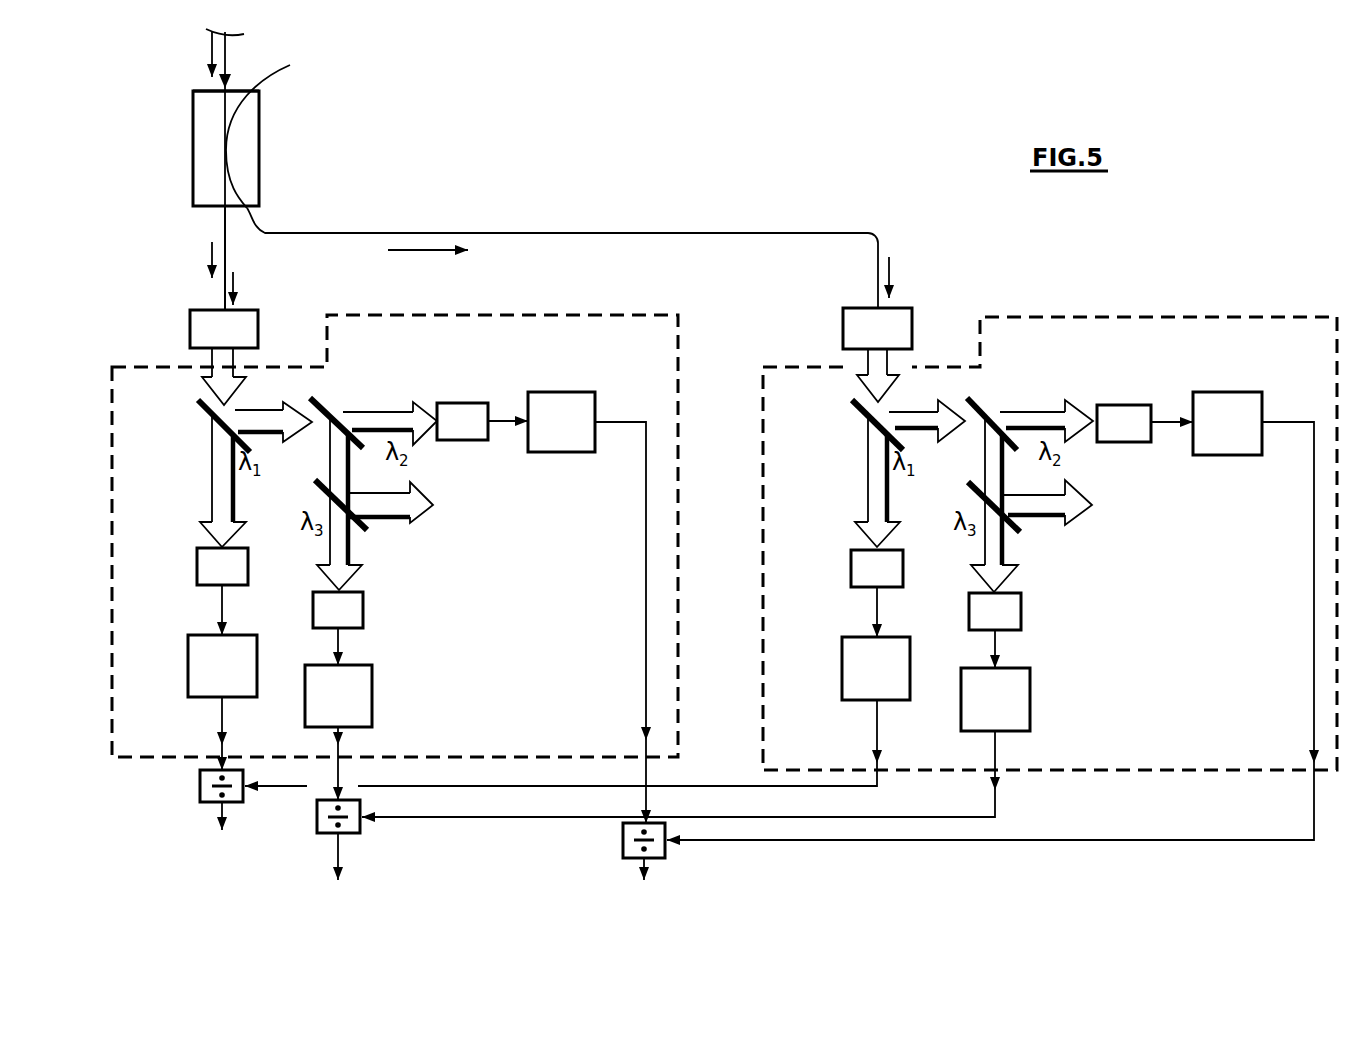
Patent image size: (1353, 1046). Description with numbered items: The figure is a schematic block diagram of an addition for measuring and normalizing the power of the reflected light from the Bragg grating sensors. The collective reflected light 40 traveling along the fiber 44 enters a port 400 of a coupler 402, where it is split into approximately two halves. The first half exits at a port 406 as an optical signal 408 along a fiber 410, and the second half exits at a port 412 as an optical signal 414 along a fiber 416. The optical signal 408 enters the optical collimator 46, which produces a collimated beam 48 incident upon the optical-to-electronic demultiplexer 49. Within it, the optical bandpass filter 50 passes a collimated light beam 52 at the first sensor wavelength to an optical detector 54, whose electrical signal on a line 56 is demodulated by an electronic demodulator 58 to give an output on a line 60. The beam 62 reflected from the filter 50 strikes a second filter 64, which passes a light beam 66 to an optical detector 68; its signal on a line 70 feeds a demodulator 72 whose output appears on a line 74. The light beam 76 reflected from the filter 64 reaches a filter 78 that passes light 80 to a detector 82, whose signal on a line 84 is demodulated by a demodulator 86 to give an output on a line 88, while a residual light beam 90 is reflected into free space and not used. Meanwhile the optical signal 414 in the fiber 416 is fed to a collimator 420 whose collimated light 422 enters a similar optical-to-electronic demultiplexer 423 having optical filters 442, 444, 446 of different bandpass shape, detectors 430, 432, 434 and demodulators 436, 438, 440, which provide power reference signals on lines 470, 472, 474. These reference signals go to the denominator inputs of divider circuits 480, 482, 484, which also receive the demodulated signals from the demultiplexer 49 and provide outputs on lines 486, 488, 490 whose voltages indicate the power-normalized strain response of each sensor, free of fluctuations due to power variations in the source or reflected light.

The light 40 is at (209, 52).
The fiber 44 is at (228, 58).
The port 400 is at (222, 88).
The coupler 402 is at (196, 144).
The port 406 is at (220, 210).
The optical signal 408 is at (206, 252).
The fiber 410 is at (222, 297).
The port 412 is at (252, 232).
The optical signal 414 is at (415, 252).
The fiber 416 is at (516, 232).
The optical collimator 46 is at (190, 332).
The collimated beam 48 is at (240, 350).
The optical-to-electronic demultiplexer 49 is at (470, 322).
The optical bandpass filter 50 is at (197, 405).
The collimated light beam 52 is at (211, 500).
The optical detector 54 is at (196, 573).
The line 56 is at (220, 605).
The electronic demodulator 58 is at (190, 650).
The line 60 is at (220, 718).
The beam 62 is at (248, 412).
The second filter 64 is at (327, 400).
The light beam 66 is at (390, 412).
The optical detector 68 is at (464, 403).
The line 70 is at (499, 423).
The electronic demodulator 72 is at (567, 392).
The line 74 is at (616, 423).
The light beam 76 is at (332, 468).
The filter 78 is at (315, 483).
The light 80 is at (352, 553).
The detector 82 is at (363, 608).
The line 84 is at (336, 645).
The demodulator 86 is at (368, 670).
The line 88 is at (336, 742).
The residual light beam 90 is at (385, 492).
The collimator 420 is at (843, 330).
The collimated light 422 is at (912, 350).
The optical-to-electronic demultiplexer 423 is at (1127, 322).
The detector 430 is at (851, 573).
The detector 432 is at (1122, 403).
The detector 434 is at (1021, 607).
The demodulator 436 is at (843, 652).
The demodulator 438 is at (1228, 392).
The demodulator 440 is at (1025, 670).
The optical filter 442 is at (852, 405).
The optical filter 444 is at (973, 400).
The optical filter 446 is at (968, 483).
The line 470 is at (875, 718).
The line 472 is at (1294, 424).
The line 474 is at (993, 744).
The divider circuit 480 is at (200, 787).
The divider circuit 482 is at (316, 817).
The divider circuit 484 is at (653, 822).
The line 486 is at (220, 816).
The line 488 is at (345, 848).
The line 490 is at (635, 858).